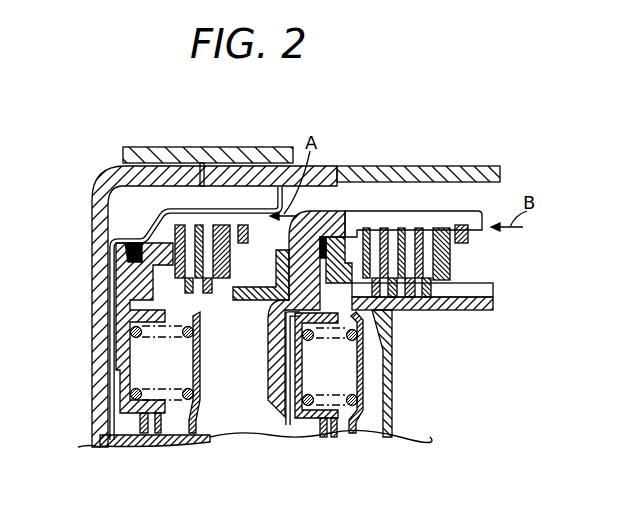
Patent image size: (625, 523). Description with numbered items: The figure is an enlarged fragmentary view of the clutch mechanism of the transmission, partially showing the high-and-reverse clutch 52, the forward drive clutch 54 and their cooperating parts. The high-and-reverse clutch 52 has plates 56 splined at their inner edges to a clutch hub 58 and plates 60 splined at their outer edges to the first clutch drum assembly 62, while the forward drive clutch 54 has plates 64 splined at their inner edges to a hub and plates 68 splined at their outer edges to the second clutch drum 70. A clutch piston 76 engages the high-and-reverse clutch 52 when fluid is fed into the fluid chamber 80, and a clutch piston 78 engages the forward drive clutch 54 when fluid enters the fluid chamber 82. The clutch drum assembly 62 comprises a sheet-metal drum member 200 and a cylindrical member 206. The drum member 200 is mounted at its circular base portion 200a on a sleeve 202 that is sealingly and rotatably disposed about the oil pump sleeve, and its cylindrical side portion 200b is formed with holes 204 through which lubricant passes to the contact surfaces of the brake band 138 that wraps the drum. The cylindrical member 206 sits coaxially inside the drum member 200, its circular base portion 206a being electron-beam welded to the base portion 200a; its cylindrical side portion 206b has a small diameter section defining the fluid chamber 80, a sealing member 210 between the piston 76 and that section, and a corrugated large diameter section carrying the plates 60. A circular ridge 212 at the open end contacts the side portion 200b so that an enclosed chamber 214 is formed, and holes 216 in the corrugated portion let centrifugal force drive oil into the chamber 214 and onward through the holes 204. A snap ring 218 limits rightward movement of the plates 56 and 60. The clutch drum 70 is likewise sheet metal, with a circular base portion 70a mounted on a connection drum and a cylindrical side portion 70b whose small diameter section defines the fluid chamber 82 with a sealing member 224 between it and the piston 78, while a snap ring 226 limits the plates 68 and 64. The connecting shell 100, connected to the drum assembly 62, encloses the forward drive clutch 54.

The high-and-reverse clutch 52 is at (118, 186).
The forward drive clutch 54 is at (387, 178).
The plates 56 is at (220, 290).
The clutch hub 58 is at (262, 300).
The plates 60 is at (165, 208).
The first clutch drum assembly 62 is at (152, 205).
The plates 64 is at (428, 295).
The plates 68 is at (418, 226).
The second clutch drum 70 is at (338, 213).
The circular base portion 70a is at (273, 387).
The cylindrical side portion 70b is at (442, 215).
The clutch piston 76 is at (120, 317).
The clutch piston 78 is at (287, 337).
The fluid chamber 80 is at (120, 427).
The fluid chamber 82 is at (302, 430).
The connecting shell 100 is at (404, 225).
The brake band 138 is at (204, 178).
The drum member 200 is at (100, 192).
The circular base portion 200a is at (97, 337).
The cylindrical side portion 200b is at (321, 235).
The sleeve 202 is at (140, 447).
The holes 204 is at (220, 158).
The cylindrical member 206 is at (127, 196).
The circular base portion 206a is at (110, 268).
The cylindrical side portion 206b is at (235, 205).
The sealing member 210 is at (112, 247).
The circular ridge 212 is at (262, 195).
The enclosed chamber 214 is at (120, 218).
The holes 216 is at (182, 207).
The snap ring 218 is at (248, 240).
The sealing member 224 is at (326, 236).
The snap ring 226 is at (462, 228).